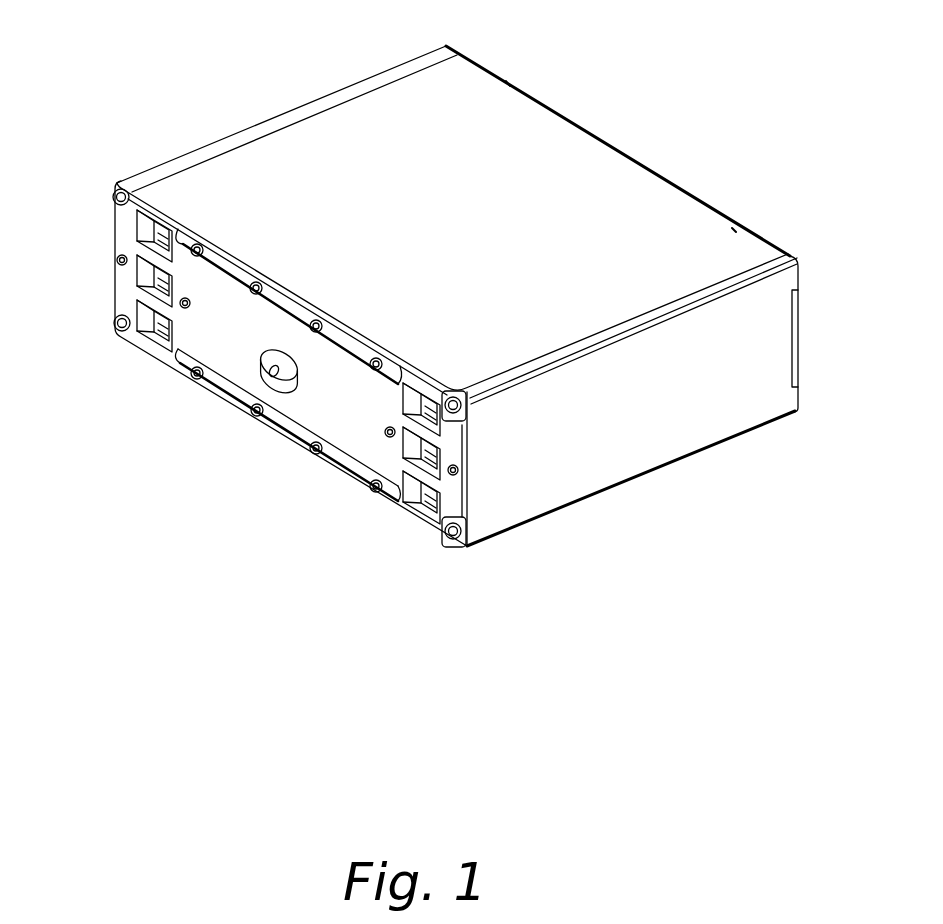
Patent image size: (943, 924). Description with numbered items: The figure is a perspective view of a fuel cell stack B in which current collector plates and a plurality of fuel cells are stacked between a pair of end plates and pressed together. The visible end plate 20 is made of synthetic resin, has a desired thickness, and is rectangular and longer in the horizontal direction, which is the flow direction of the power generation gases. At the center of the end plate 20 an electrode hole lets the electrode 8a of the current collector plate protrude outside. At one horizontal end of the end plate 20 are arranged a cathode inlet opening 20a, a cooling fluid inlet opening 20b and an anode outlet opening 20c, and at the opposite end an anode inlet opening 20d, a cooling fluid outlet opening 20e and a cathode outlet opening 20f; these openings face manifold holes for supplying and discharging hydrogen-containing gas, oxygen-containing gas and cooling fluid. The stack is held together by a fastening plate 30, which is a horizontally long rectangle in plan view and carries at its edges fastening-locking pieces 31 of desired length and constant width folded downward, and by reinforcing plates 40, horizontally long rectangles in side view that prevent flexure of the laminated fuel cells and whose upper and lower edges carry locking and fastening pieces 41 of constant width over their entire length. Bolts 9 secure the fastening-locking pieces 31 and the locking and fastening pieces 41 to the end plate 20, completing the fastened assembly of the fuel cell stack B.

The fuel cell stack B is at (108, 166).
The end plate 20 is at (327, 418).
The cathode inlet opening 20a is at (143, 222).
The cooling fluid inlet opening 20b is at (143, 272).
The anode outlet opening 20c is at (143, 316).
The anode inlet opening 20d is at (432, 413).
The cooling fluid outlet opening 20e is at (435, 467).
The cathode outlet opening 20f is at (428, 510).
The fastening plate 30 is at (452, 218).
The fastening-locking piece 31 is at (223, 262).
The reinforcing plate 40 is at (632, 401).
The locking and fastening piece 41 is at (377, 77).
The bolt 9 is at (184, 228).
The electrode 8a is at (260, 372).